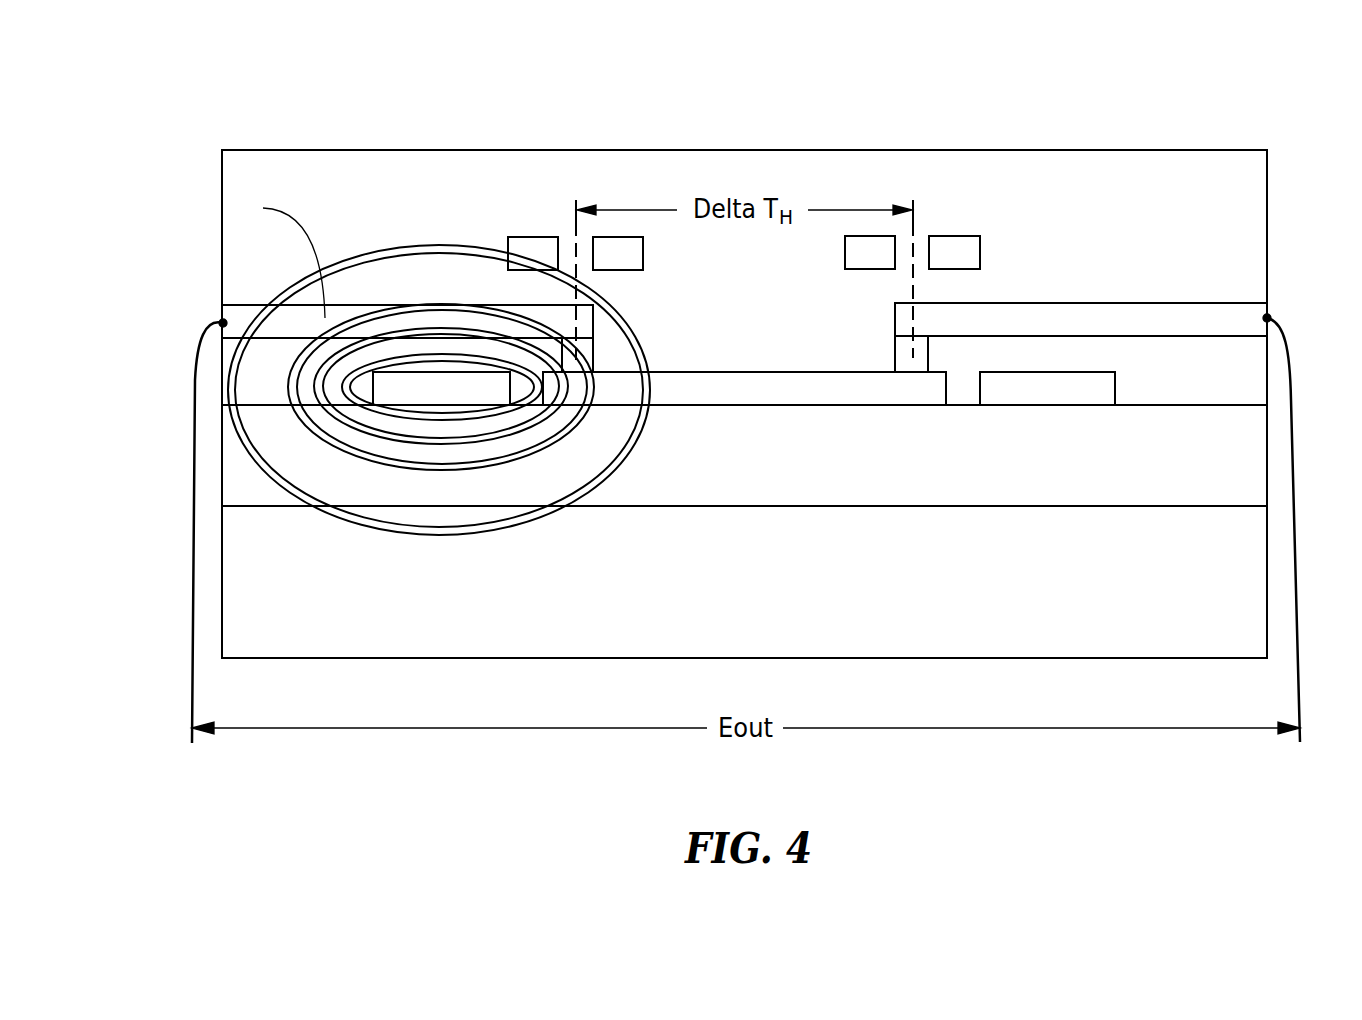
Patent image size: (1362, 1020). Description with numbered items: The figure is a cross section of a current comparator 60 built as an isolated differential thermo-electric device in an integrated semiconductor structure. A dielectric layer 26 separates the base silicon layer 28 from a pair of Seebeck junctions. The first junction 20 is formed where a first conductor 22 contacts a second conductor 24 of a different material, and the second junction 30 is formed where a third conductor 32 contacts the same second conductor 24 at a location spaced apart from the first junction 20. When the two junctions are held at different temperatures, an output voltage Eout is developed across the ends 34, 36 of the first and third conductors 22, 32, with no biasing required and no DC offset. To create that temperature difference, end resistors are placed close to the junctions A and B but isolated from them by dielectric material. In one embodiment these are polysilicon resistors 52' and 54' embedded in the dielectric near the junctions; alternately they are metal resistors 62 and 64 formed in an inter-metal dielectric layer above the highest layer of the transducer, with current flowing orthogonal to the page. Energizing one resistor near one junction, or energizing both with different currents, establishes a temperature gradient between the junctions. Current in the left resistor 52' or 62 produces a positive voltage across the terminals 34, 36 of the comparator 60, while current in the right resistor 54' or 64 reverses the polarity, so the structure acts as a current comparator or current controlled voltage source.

The current comparator 60 is at (1276, 130).
The metal resistor 62 is at (533, 237).
The metal resistor 64 is at (955, 237).
The first junction 20 is at (577, 143).
The second junction 30 is at (911, 147).
The first conductor 22 is at (237, 305).
The third conductor 32 is at (1253, 300).
The second conductor 24 is at (860, 405).
The dielectric layer 26 is at (1233, 488).
The base silicon layer 28 is at (1150, 638).
The end of first conductor 34 is at (193, 745).
The end of third conductor 36 is at (1300, 742).
The polysilicon resistor 52' is at (439, 390).
The polysilicon resistor 54' is at (1065, 437).